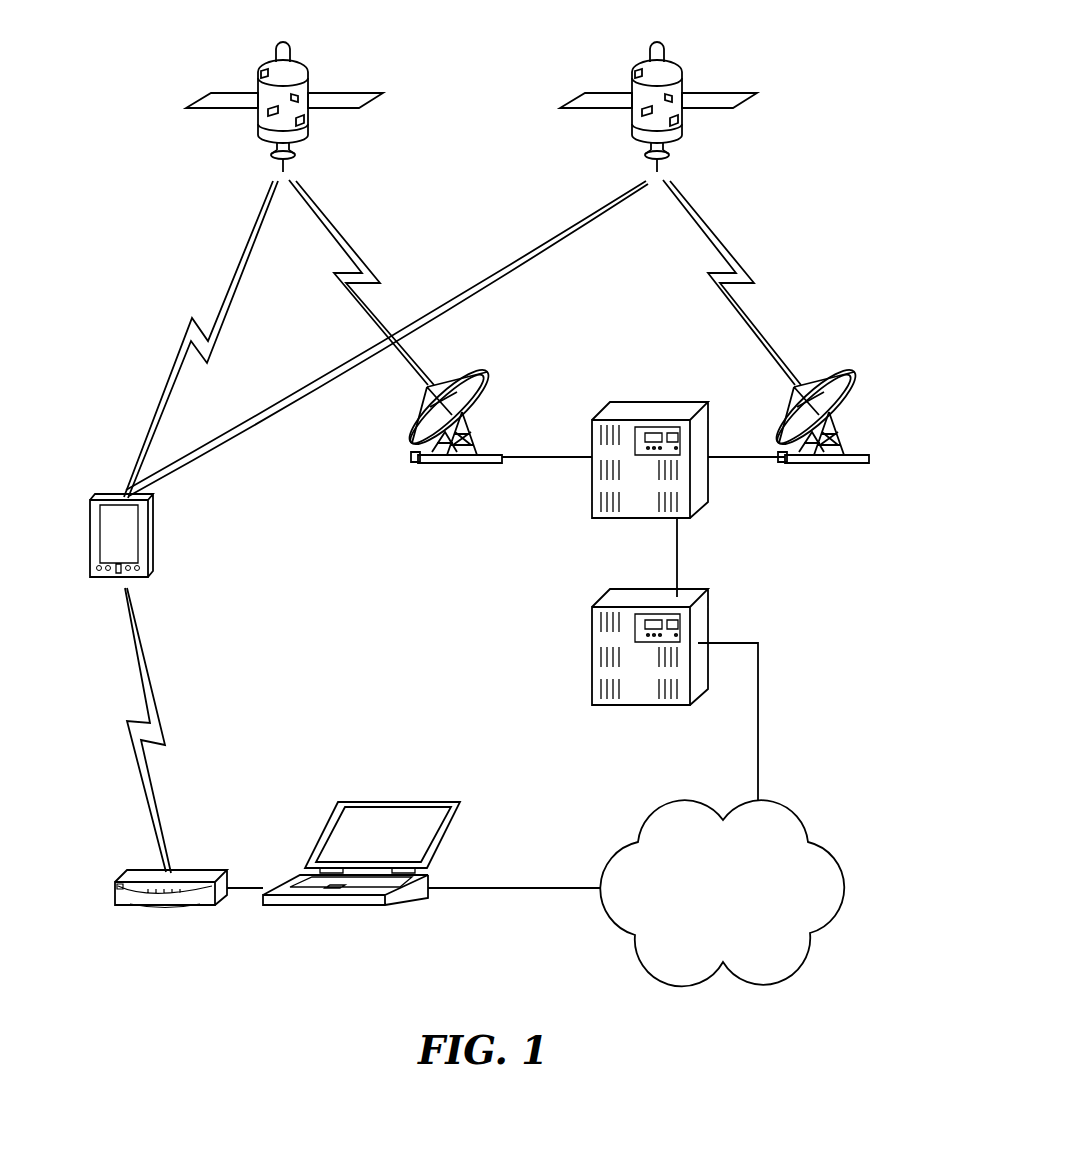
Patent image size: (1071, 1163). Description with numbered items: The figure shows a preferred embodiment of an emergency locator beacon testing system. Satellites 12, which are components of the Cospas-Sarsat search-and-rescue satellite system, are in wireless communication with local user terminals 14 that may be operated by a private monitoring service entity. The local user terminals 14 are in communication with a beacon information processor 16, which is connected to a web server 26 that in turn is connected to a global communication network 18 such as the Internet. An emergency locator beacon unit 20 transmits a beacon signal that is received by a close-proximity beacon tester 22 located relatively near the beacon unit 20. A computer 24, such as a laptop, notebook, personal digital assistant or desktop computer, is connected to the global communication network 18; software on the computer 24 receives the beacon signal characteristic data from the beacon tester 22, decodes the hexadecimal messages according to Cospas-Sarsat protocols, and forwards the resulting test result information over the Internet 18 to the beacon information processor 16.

The satellites 12 is at (471, 96).
The local user terminals 14 is at (660, 403).
The beacon information processor 16 is at (650, 437).
The global communication network 18 is at (775, 820).
The emergency locator beacon unit 20 is at (152, 515).
The close-proximity beacon tester 22 is at (195, 870).
The computer 24 is at (390, 803).
The web server 26 is at (667, 629).